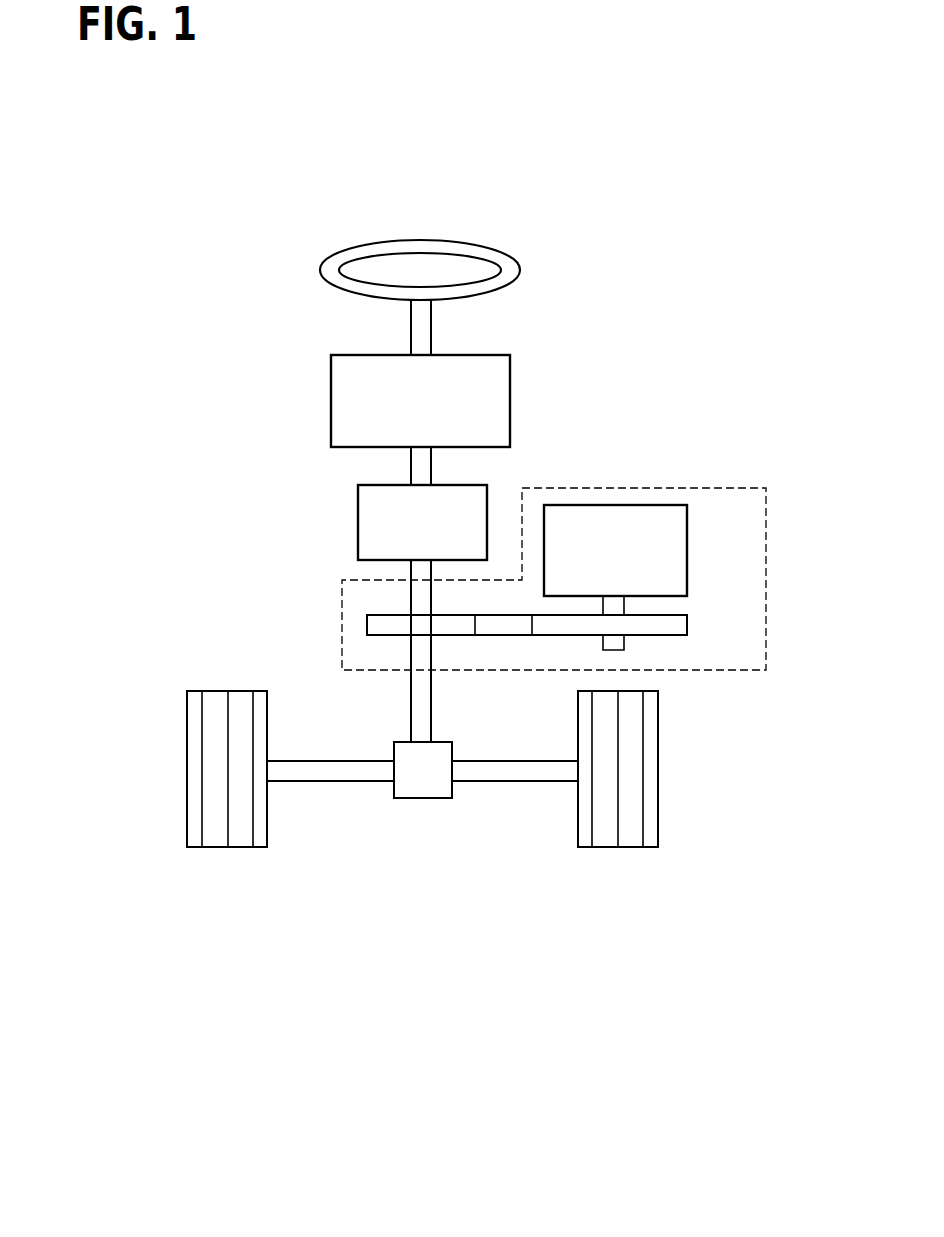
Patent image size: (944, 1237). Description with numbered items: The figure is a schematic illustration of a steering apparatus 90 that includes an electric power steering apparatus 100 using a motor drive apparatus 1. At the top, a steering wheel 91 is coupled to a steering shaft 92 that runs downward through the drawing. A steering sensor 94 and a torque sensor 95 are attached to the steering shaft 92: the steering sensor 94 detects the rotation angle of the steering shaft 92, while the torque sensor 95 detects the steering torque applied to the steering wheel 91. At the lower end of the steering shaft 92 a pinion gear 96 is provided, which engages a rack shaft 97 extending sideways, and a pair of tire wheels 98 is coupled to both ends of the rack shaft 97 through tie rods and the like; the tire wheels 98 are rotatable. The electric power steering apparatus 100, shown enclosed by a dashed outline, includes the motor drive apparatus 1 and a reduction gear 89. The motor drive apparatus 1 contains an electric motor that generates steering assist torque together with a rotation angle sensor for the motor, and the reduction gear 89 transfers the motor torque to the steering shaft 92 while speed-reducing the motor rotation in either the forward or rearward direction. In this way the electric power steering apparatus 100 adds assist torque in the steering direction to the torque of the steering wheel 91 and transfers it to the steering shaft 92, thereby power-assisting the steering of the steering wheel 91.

The motor drive apparatus 1 is at (688, 525).
The reduction gear 89 is at (688, 620).
The steering apparatus 90 is at (342, 970).
The steering wheel 91 is at (320, 270).
The steering shaft 92 is at (410, 323).
The steering sensor 94 is at (331, 378).
The torque sensor 95 is at (358, 500).
The pinion gear 96 is at (412, 799).
The rack shaft 97 is at (322, 782).
The tire wheels 98 is at (243, 848).
The electric power steering apparatus 100 is at (767, 512).